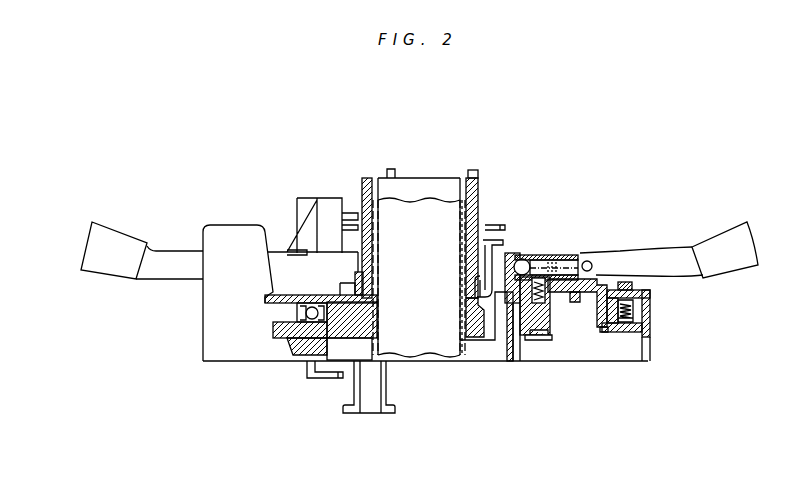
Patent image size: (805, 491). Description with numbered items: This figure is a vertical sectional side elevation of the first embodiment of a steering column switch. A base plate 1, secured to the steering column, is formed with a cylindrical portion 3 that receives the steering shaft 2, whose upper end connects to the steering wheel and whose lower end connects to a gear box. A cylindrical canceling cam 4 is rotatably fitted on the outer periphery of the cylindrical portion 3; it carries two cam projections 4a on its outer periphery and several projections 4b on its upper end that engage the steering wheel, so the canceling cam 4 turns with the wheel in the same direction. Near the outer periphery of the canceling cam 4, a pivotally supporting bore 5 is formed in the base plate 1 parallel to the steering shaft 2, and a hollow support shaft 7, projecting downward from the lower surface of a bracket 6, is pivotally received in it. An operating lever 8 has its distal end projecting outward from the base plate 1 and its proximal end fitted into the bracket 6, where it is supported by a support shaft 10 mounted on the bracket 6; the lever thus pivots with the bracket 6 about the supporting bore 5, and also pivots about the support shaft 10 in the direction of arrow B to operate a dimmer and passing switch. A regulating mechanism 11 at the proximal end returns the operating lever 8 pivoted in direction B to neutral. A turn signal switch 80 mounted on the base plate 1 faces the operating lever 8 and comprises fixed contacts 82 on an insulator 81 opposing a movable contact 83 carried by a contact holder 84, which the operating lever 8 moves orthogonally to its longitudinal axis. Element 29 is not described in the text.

The base plate 1 is at (222, 298).
The steering shaft 2 is at (382, 265).
The cylindrical portion 3 is at (460, 219).
The canceling cam 4 is at (480, 176).
The cam projections 4a is at (478, 208).
The projections 4b is at (472, 170).
The pivotally supporting bore 5 is at (522, 303).
The bracket 6 is at (512, 253).
The hollow support shaft 7 is at (575, 312).
The operating lever 8 is at (727, 226).
The support shaft 10 is at (590, 261).
The regulating mechanism 11 is at (527, 252).
The handle 29 is at (118, 246).
The turn signal switch 80 is at (649, 339).
The insulator 81 is at (649, 348).
The fixed contacts 82 is at (622, 333).
The movable contact 83 is at (650, 312).
The contact holder 84 is at (650, 294).
The arrow B is at (792, 208).